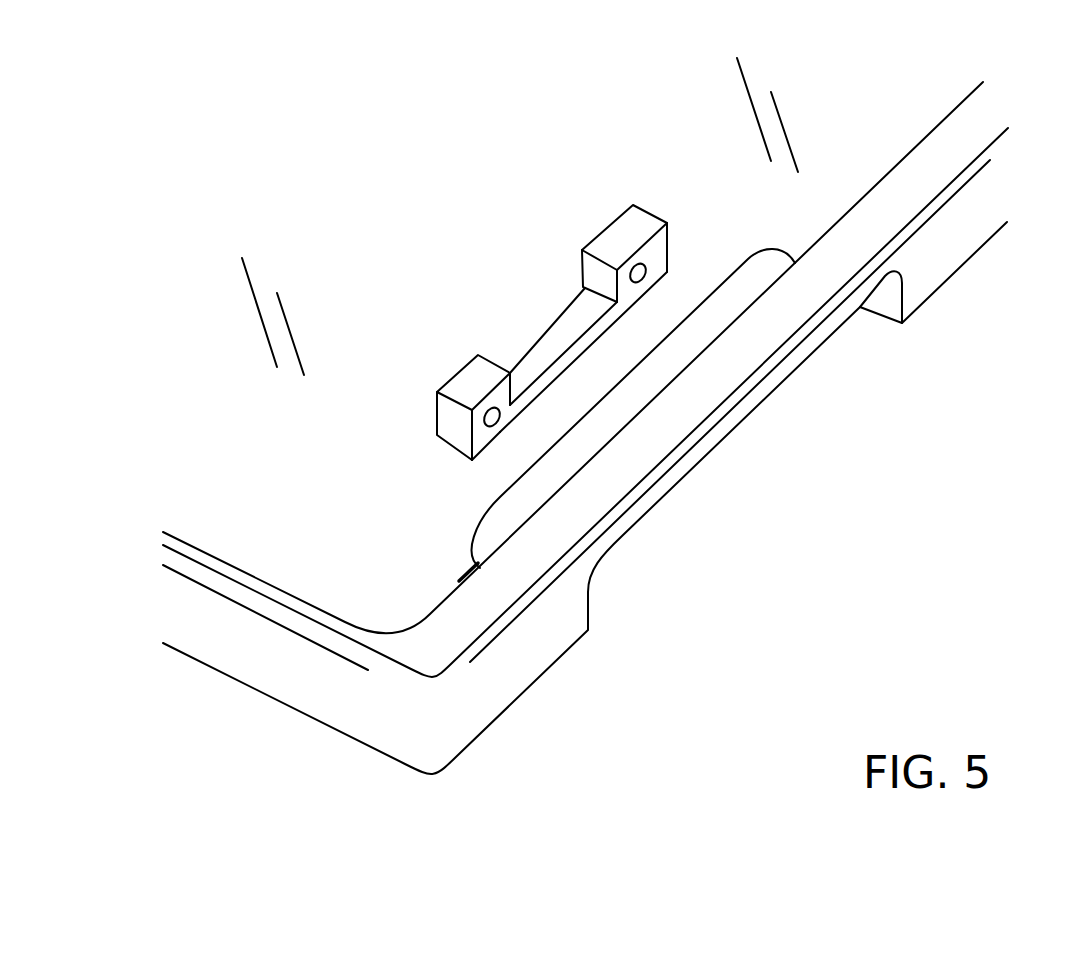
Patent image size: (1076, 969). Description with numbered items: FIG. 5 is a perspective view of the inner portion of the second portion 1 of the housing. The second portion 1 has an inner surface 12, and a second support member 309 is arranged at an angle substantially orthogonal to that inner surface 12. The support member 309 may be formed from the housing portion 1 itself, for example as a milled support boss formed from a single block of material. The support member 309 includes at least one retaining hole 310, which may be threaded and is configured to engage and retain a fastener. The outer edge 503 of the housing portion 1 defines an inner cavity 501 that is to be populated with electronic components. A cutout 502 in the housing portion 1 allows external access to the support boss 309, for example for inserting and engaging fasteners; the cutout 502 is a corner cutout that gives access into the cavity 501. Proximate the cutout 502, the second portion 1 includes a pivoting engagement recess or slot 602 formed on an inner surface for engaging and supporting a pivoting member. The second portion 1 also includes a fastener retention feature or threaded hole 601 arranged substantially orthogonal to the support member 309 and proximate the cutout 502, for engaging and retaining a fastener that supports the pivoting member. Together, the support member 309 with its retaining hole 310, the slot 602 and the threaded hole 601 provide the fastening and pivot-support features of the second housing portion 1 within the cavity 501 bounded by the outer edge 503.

The second portion of the housing 1 is at (1008, 128).
The inner surface 12 is at (558, 330).
The second support member 309 is at (638, 222).
The retaining hole 310 is at (499, 440).
The inner cavity 501 is at (618, 412).
The cutout 502 is at (822, 446).
The outer edge 503 is at (907, 155).
The threaded hole 601 is at (883, 296).
The pivoting engagement slot 602 is at (460, 552).